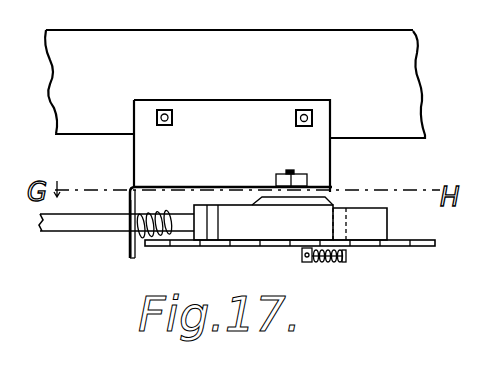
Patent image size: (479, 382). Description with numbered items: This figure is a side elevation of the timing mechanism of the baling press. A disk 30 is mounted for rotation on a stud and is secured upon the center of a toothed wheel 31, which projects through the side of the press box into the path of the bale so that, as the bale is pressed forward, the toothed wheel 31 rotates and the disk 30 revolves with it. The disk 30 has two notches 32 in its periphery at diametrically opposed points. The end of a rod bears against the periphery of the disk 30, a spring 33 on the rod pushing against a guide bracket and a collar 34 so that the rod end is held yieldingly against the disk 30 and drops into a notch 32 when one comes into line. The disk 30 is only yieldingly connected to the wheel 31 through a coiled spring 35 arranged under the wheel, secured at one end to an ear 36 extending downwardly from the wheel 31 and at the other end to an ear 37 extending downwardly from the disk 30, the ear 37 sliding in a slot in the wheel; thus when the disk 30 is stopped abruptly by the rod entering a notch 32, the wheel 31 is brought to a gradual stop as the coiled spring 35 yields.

The disk 30 is at (378, 225).
The toothed wheel 31 is at (172, 247).
The notches 32 is at (214, 221).
The spring 33 is at (130, 240).
The collar 34 is at (170, 214).
The coiled spring 35 is at (318, 262).
The ear 36 is at (303, 256).
The ear 37 is at (330, 249).